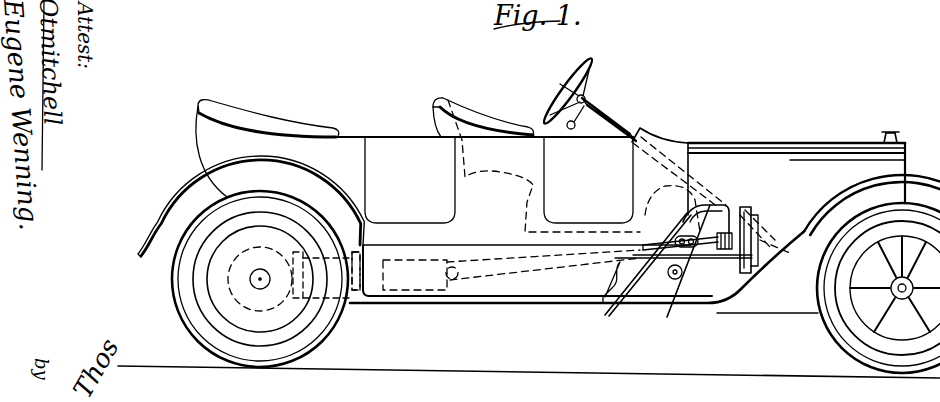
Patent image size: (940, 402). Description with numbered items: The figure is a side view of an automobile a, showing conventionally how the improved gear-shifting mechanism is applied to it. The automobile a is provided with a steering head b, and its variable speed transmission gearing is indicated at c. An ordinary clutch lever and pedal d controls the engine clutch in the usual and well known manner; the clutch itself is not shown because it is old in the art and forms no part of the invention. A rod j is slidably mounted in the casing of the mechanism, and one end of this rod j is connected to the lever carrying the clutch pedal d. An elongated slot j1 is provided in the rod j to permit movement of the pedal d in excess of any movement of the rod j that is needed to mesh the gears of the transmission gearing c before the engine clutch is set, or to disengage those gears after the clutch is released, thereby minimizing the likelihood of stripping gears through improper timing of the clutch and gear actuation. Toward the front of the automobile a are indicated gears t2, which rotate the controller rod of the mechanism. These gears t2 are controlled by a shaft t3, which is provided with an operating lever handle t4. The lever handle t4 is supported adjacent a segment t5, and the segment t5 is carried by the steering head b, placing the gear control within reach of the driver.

The automobile a is at (790, 158).
The steering head b is at (603, 106).
The variable speed transmission gearing c is at (354, 297).
The clutch lever and pedal d is at (672, 238).
The rod j is at (630, 283).
The elongated slot j1 is at (676, 284).
The gears t2 is at (768, 260).
The shaft t3 is at (612, 124).
The operating lever handle t4 is at (572, 130).
The segment t5 is at (590, 104).